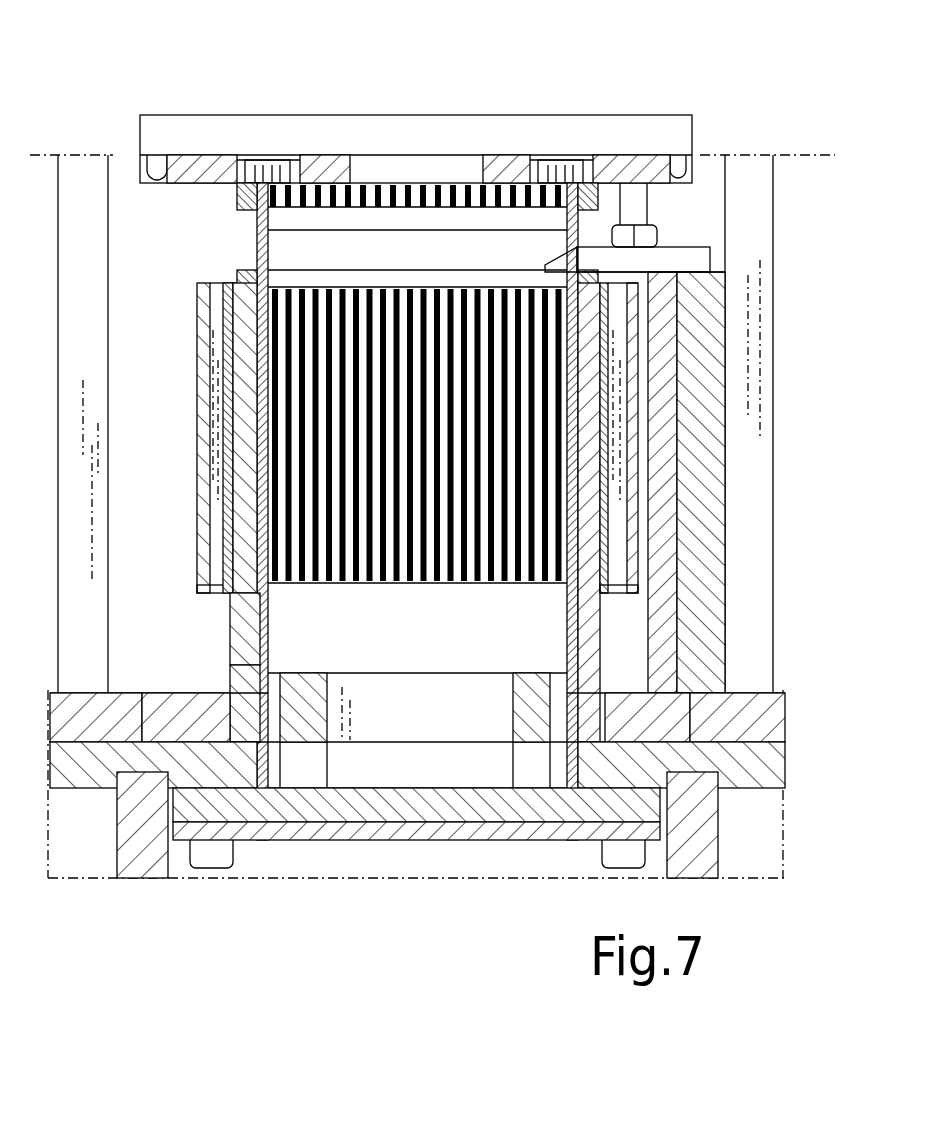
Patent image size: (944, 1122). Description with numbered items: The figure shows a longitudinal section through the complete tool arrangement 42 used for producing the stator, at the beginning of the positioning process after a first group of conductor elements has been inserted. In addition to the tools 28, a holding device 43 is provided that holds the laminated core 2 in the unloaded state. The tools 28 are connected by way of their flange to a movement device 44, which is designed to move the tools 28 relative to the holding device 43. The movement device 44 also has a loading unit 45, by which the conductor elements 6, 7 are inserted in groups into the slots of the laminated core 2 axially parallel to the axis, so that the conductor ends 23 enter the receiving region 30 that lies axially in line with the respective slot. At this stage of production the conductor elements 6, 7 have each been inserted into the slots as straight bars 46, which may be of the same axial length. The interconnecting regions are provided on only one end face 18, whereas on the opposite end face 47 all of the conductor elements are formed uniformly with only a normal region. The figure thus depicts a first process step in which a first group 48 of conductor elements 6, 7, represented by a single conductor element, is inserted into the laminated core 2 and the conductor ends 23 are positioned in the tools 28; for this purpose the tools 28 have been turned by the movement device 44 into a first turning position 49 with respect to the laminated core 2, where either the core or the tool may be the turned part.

The laminated core 2 is at (492, 590).
The conductor element 6 is at (257, 254).
The conductor element 7 is at (572, 511).
The end face 18 is at (496, 284).
The conductor end 23 is at (237, 197).
The tool 28 is at (513, 167).
The receiving region 30 is at (404, 217).
The tool arrangement 42 is at (798, 246).
The holding device 43 is at (617, 457).
The movement device 44 is at (256, 116).
The loading unit 45 is at (426, 845).
The straight bar 46 is at (245, 608).
The end face 47 is at (417, 590).
The first group 48 is at (245, 663).
The first turning position 49 is at (340, 170).